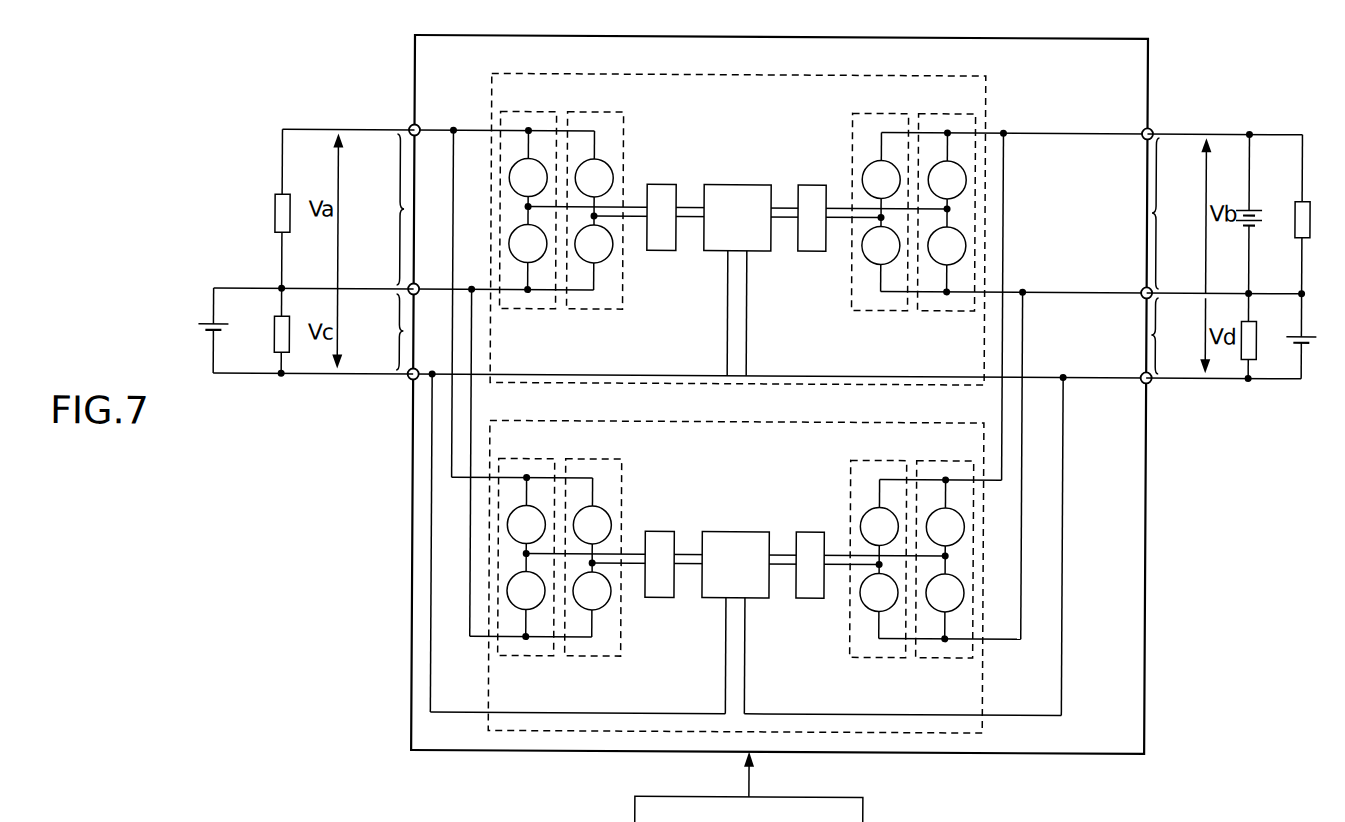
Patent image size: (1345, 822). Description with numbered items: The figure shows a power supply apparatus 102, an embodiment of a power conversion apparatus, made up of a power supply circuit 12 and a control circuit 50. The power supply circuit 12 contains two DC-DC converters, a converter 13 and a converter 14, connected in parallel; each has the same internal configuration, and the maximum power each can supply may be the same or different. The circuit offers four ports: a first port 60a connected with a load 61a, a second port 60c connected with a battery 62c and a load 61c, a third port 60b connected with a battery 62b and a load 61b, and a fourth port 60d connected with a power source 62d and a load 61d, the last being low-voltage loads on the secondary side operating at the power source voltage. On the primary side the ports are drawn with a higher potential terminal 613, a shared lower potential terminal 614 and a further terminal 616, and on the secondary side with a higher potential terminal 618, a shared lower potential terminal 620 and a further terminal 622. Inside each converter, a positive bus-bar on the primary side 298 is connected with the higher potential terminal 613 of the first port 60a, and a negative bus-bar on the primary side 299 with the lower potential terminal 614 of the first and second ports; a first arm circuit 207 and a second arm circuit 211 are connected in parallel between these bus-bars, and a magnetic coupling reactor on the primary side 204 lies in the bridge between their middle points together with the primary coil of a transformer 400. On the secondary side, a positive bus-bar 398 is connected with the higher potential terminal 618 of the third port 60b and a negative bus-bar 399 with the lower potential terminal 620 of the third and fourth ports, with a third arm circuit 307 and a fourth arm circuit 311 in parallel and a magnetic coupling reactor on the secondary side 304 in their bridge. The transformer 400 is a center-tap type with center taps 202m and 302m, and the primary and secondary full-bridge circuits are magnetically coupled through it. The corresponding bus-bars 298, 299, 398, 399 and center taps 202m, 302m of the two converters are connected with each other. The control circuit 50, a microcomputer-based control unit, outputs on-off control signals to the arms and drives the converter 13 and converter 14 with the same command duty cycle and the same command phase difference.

The power supply apparatus 102 is at (357, 20).
The power supply circuit 12 is at (700, 36).
The converter 13 is at (760, 74).
The converter 14 is at (760, 421).
The higher potential terminal 613 is at (413, 128).
The lower potential terminal 614 is at (412, 289).
The third terminal 616 is at (413, 378).
The higher potential terminal 618 is at (1150, 128).
The lower potential terminal 620 is at (1146, 288).
The sixth terminal 622 is at (1146, 378).
The load 61a is at (280, 195).
The load 61b is at (1296, 236).
The load 61c is at (276, 322).
The load 61d is at (1258, 336).
The battery 62b is at (1255, 205).
The battery 62c is at (214, 345).
The power source 62d is at (1309, 346).
The first port 60a is at (380, 209).
The third port 60b is at (1177, 213).
The second port 60c is at (381, 332).
The fourth port 60d is at (1176, 336).
The positive bus-bar on the primary side 298 is at (567, 392).
The negative bus-bar on the primary side 299 is at (574, 290).
The first arm circuit 207 is at (527, 310).
The second arm circuit 211 is at (616, 310).
The magnetic coupling reactor on the primary side 204 is at (662, 183).
The transformer 400 is at (737, 183).
The magnetic coupling reactor on the secondary side 304 is at (812, 183).
The center tap 202m is at (722, 251).
The center tap 302m is at (755, 251).
The positive bus-bar on the secondary side 398 is at (905, 394).
The negative bus-bar on the secondary side 399 is at (897, 290).
The fourth arm circuit 311 is at (858, 310).
The third arm circuit 307 is at (947, 310).
The control circuit 50 is at (790, 795).